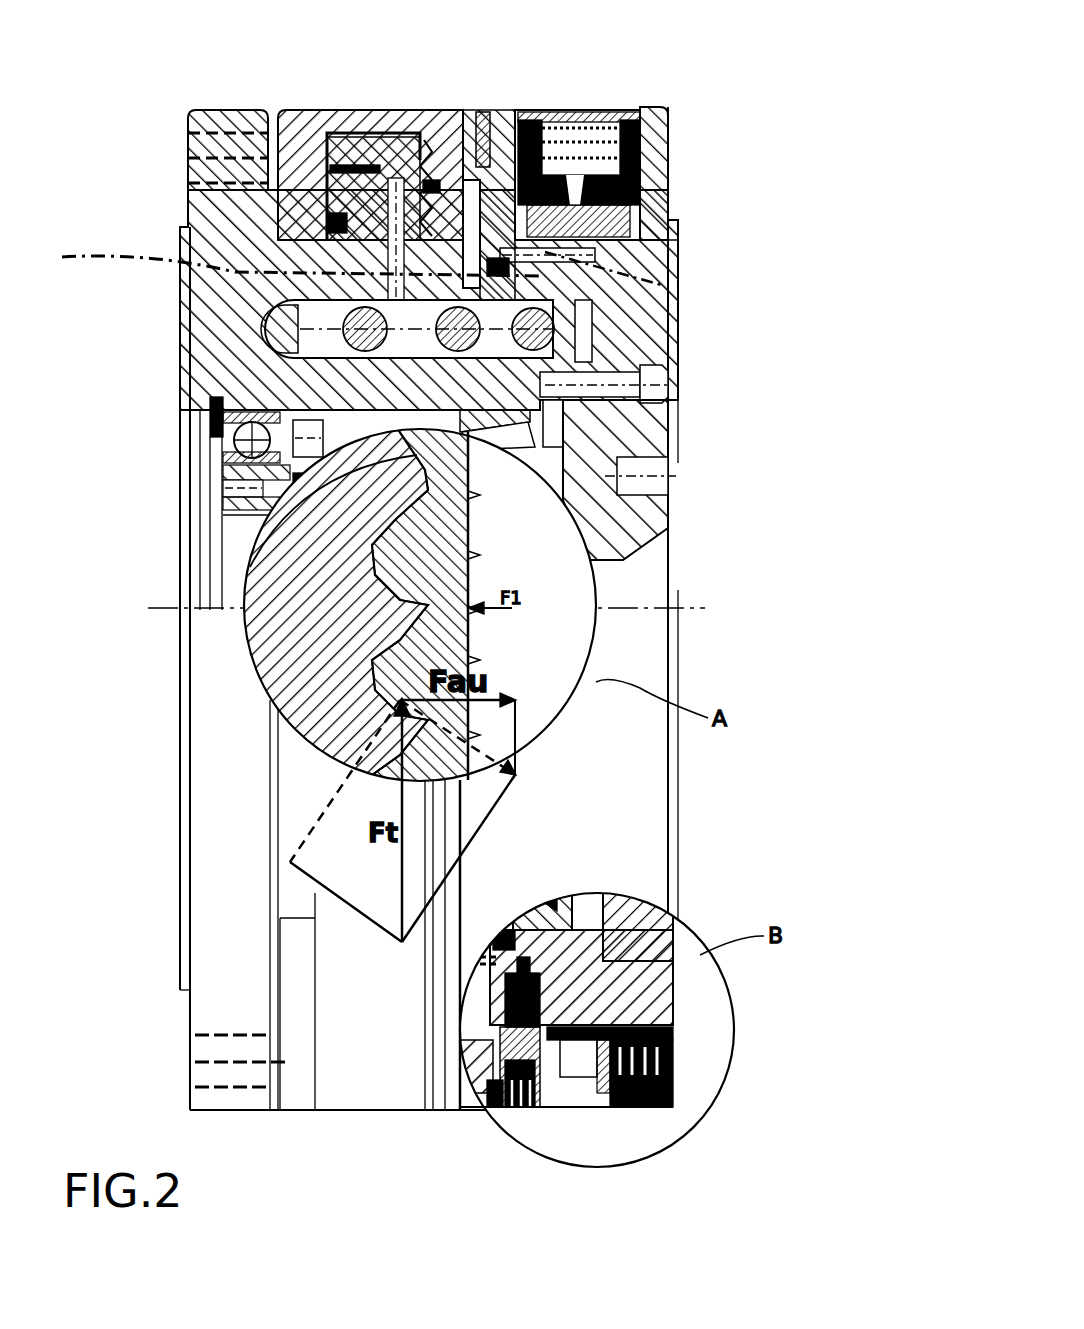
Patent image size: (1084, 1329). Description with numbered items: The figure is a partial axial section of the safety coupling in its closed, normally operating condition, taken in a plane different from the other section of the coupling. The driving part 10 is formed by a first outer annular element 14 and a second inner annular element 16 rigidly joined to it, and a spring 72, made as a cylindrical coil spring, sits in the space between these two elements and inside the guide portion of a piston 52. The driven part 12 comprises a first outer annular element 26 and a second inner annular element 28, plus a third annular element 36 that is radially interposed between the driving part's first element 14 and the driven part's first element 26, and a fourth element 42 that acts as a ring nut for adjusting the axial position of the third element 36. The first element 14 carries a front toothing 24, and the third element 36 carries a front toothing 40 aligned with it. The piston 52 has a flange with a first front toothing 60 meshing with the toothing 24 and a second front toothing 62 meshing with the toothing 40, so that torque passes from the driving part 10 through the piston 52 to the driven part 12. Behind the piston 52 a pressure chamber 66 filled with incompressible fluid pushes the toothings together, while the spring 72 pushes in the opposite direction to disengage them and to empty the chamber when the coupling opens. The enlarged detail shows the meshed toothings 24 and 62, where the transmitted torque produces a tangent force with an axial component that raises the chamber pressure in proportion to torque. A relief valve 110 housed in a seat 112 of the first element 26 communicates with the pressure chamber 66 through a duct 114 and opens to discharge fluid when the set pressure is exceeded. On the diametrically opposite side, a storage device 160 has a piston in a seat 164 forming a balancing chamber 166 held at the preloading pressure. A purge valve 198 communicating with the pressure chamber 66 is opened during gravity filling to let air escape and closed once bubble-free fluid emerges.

The driving part 10 is at (150, 236).
The driven part 12 is at (688, 182).
The first outer annular element 14 is at (188, 207).
The second inner annular element 16 is at (190, 345).
The front toothing 24 is at (427, 172).
The first outer annular element 26 is at (670, 135).
The second inner annular element 28 is at (652, 428).
The third annular element 36 is at (356, 180).
The front toothing 40 is at (388, 178).
The fourth element 42 is at (304, 140).
The piston 52 is at (423, 232).
The first front toothing 60 is at (262, 568).
The second front toothing 62 is at (190, 170).
The pressure chamber 66 is at (470, 130).
The spring 72 is at (275, 325).
The relief valve 110 is at (640, 188).
The seat 112 is at (534, 200).
The duct 114 is at (652, 268).
The storage device 160 is at (585, 1088).
The seat 164 is at (570, 1095).
The balancing chamber 166 is at (612, 1012).
The purge valve 198 is at (498, 108).